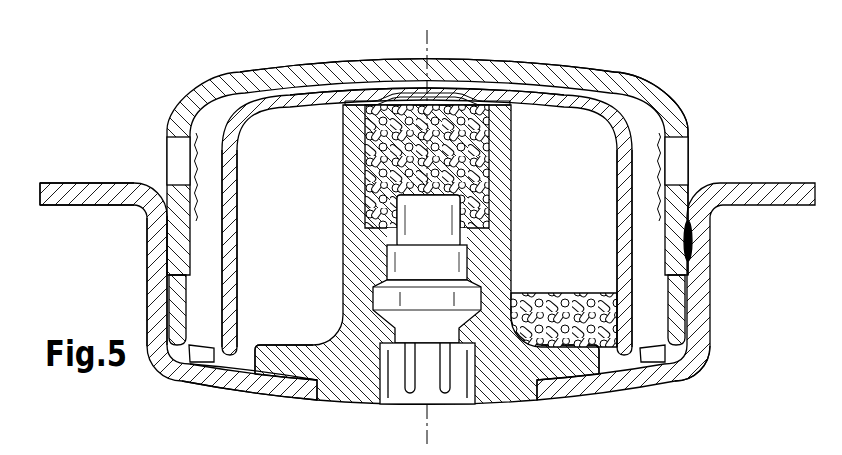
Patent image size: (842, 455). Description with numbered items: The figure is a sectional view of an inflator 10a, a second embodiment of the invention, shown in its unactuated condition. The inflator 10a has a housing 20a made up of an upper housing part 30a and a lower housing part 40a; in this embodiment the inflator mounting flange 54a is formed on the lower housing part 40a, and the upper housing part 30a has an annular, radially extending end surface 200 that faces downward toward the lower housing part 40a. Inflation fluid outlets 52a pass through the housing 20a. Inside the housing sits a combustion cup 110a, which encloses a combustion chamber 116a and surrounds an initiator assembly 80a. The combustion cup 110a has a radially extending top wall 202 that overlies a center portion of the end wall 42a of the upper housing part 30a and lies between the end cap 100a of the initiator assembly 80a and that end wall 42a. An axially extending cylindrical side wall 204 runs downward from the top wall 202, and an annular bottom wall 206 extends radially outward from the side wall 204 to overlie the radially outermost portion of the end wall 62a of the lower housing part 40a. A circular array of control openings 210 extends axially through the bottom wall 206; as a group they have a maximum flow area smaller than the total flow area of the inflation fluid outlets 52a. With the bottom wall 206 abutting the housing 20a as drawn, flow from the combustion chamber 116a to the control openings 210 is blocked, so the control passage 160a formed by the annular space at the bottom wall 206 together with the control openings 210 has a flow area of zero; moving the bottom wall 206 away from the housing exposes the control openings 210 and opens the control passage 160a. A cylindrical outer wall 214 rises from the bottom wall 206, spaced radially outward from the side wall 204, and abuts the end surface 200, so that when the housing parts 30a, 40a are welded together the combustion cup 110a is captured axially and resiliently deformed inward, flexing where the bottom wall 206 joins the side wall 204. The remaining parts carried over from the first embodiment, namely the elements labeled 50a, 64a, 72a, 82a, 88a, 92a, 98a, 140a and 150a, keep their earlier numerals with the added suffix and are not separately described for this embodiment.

The inflator 10a is at (96, 137).
The housing 20a is at (304, 58).
The upper housing part 30a is at (618, 66).
The lower housing part 40a is at (176, 382).
The end wall 42a is at (548, 68).
The central axis 50a is at (430, 427).
The inflation fluid outlets 52a is at (177, 158).
The inflator mounting flange 54a is at (87, 206).
The end wall 62a is at (293, 390).
The side wall 64a is at (158, 248).
The O-ring seal 72a is at (693, 245).
The initiator assembly 80a is at (538, 249).
The hub body 82a is at (332, 271).
The hub base 88a is at (287, 362).
The nut 92a is at (472, 297).
The inner wall 98a is at (528, 201).
The end cap 100a is at (458, 100).
The combustion cup 110a is at (249, 160).
The combustion chamber 116a is at (318, 243).
The particulate material 140a is at (568, 340).
The wave spring 150a is at (662, 180).
The control passage 160a is at (672, 370).
The end surface 200 is at (173, 282).
The top wall 202 is at (552, 108).
The side wall 204 is at (230, 200).
The bottom wall 206 is at (187, 350).
The control openings 210 is at (202, 352).
The outer wall 214 is at (685, 298).